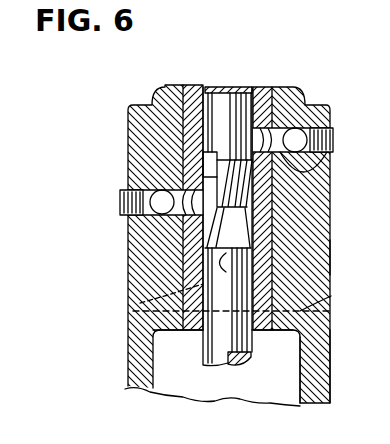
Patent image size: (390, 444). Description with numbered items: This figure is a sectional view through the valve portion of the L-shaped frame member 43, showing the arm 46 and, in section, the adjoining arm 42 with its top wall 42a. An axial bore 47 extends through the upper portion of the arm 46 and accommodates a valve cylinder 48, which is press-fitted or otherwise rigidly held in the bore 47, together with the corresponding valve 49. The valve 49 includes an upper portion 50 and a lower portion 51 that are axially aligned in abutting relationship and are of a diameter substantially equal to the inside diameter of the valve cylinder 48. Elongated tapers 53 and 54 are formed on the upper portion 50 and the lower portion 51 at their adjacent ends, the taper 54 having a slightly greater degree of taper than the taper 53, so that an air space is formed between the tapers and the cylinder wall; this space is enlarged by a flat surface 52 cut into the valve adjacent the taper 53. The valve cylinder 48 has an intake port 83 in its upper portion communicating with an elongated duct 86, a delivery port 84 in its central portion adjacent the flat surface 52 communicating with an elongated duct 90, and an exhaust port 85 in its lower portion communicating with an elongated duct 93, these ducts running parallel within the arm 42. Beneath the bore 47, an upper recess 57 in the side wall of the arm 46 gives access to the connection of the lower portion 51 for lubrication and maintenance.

The arm 42 is at (339, 295).
The wall 42a is at (145, 101).
The L-shaped frame member 43 is at (337, 257).
The other arm 46 is at (331, 367).
The axial bore 47 is at (273, 87).
The valve cylinder 48 is at (192, 87).
The valve 49 is at (226, 100).
The upper portion 50 is at (223, 125).
The lower portion 51 is at (203, 352).
The flat surface 52 is at (215, 236).
The taper 53 is at (223, 170).
The taper 54 is at (183, 265).
The upper recess 57 is at (283, 398).
The intake port 83 is at (257, 140).
The delivery port 84 is at (192, 216).
The exhaust port 85 is at (265, 251).
The elongated duct 86 is at (331, 163).
The elongated duct 90 is at (127, 229).
The elongated duct 93 is at (127, 313).